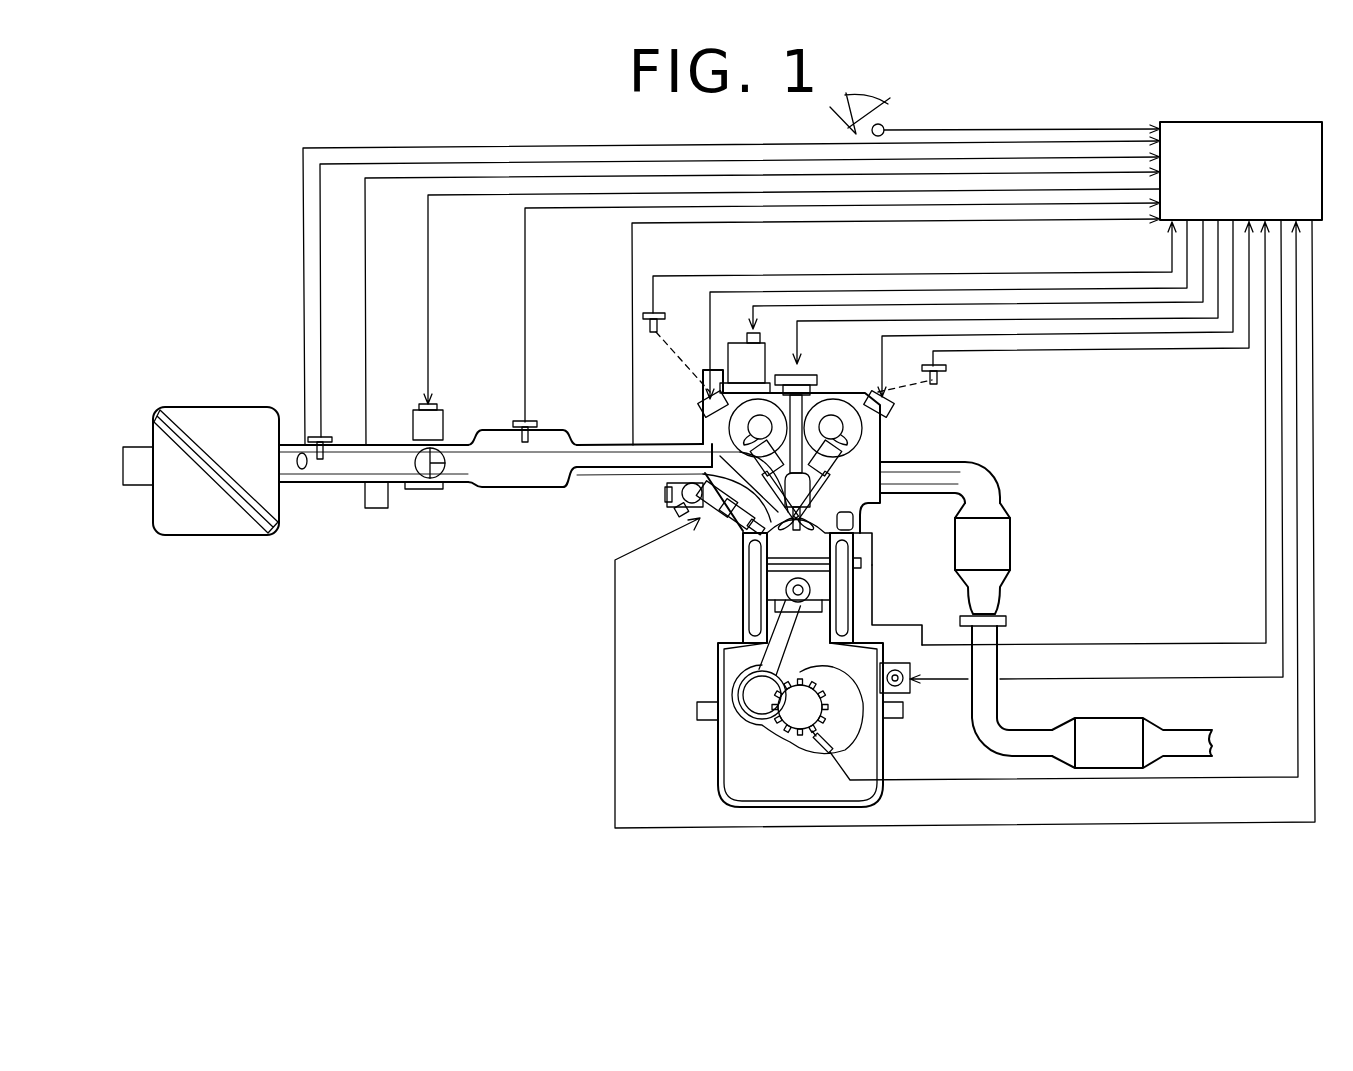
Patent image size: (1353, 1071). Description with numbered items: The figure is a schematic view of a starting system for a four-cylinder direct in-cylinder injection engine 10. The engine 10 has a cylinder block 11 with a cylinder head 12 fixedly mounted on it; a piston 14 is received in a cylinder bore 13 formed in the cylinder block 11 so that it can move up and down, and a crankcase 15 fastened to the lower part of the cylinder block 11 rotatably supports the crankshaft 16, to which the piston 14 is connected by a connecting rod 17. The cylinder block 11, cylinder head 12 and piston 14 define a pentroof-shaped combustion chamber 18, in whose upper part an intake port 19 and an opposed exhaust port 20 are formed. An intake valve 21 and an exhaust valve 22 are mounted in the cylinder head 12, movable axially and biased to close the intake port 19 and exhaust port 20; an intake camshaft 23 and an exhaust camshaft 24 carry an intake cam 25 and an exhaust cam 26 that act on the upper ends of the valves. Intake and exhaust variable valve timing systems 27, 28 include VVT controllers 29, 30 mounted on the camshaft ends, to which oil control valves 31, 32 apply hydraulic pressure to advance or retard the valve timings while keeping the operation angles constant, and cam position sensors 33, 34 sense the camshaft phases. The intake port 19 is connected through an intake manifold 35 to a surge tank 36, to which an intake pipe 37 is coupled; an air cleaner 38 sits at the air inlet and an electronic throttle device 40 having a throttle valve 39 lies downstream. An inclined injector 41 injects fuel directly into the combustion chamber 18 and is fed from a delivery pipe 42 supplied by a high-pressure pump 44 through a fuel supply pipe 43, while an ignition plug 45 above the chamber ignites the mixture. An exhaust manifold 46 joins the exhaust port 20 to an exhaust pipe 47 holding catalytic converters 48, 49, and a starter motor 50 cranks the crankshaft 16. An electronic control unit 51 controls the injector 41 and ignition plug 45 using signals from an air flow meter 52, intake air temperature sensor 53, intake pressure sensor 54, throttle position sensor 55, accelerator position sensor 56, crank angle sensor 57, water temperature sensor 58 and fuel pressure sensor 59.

The engine 10 is at (1054, 456).
The cylinder block 11 is at (744, 618).
The cylinder head 12 is at (885, 433).
The cylinder bore 13 is at (768, 628).
The piston 14 is at (764, 558).
The crankcase 15 is at (718, 773).
The crankshaft 16 is at (800, 713).
The connecting rod 17 is at (742, 724).
The combustion chamber 18 is at (818, 547).
The intake port 19 is at (730, 470).
The exhaust port 20 is at (903, 462).
The intake valve 21 is at (779, 535).
The exhaust valve 22 is at (861, 516).
The intake camshaft 23 is at (796, 372).
The exhaust camshaft 24 is at (837, 403).
The intake cam 25 is at (708, 395).
The exhaust cam 26 is at (882, 385).
The intake variable valve timing system 27 is at (742, 358).
The exhaust variable valve timing system 28 is at (842, 405).
The VVT controller 29 is at (730, 443).
The VVT controller 30 is at (955, 450).
The oil control valve 31 is at (703, 398).
The oil control valve 32 is at (890, 412).
The cam position sensor 33 is at (641, 325).
The cam position sensor 34 is at (948, 371).
The intake manifold 35 is at (585, 443).
The surge tank 36 is at (505, 487).
The intake pipe 37 is at (355, 482).
The air cleaner 38 is at (215, 407).
The throttle valve 39 is at (446, 458).
The electronic throttle device 40 is at (444, 410).
The injector 41 is at (695, 528).
The delivery pipe 42 is at (670, 513).
The fuel supply pipe 43 is at (706, 378).
The high-pressure pump 44 is at (755, 400).
The ignition plug 45 is at (832, 578).
The exhaust manifold 46 is at (1003, 504).
The exhaust pipe 47 is at (998, 660).
The catalytic converter 48 is at (1004, 543).
The catalytic converter 49 is at (1106, 718).
The starter motor 50 is at (904, 693).
The electronic control unit 51 is at (1243, 122).
The air flow meter 52 is at (302, 470).
The intake air temperature sensor 53 is at (323, 437).
The intake pressure sensor 54 is at (531, 422).
The throttle position sensor 55 is at (428, 490).
The accelerator position sensor 56 is at (887, 125).
The crank angle sensor 57 is at (834, 736).
The water temperature sensor 58 is at (860, 560).
The fuel pressure sensor 59 is at (668, 495).